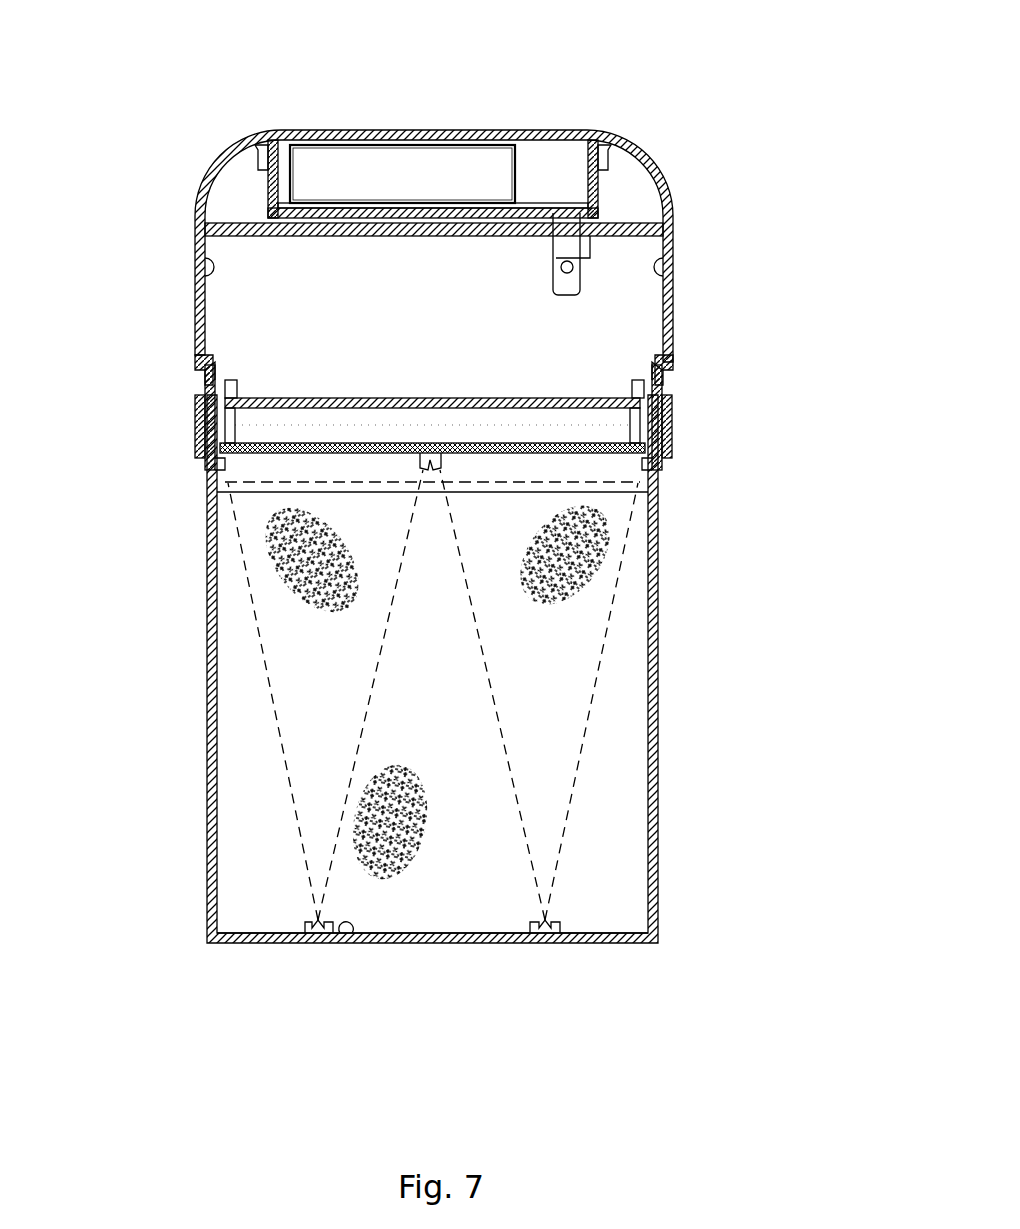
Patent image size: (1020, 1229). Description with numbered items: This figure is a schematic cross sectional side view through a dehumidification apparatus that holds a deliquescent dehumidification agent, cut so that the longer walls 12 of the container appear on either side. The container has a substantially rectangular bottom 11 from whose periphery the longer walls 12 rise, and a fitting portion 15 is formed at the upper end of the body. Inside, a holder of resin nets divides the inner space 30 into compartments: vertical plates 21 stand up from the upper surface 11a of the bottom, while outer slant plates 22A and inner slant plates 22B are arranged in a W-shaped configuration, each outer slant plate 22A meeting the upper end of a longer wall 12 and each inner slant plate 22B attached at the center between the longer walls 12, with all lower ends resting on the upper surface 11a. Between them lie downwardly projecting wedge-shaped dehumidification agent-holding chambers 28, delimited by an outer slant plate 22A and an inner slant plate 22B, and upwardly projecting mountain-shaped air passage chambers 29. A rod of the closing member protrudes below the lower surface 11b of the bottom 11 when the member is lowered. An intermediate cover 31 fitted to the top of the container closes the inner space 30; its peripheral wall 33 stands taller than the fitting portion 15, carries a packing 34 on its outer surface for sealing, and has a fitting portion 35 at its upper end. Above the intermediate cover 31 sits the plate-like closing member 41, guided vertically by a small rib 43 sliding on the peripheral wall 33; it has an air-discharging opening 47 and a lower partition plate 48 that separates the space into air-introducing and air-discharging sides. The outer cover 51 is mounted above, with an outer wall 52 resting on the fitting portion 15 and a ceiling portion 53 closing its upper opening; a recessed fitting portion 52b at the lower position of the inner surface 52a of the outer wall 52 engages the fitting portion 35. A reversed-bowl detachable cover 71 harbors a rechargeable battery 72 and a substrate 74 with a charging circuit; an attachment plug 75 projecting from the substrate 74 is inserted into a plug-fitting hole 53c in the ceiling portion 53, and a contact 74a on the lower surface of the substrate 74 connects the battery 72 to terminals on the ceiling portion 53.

The bottom 11 is at (255, 945).
The upper surface of the bottom 11a is at (348, 940).
The lower surface of the bottom 11b is at (500, 940).
The longer wall 12 is at (207, 786).
The fitting portion 15 is at (200, 430).
The vertical plate 21 is at (443, 703).
The outer slant plate 22A is at (268, 712).
The inner slant plate 22B is at (380, 628).
The dehumidification agent-holding chamber 28 is at (335, 735).
The air passage chamber 29 is at (282, 890).
The inner space 30 is at (476, 862).
The intermediate cover 31 is at (275, 455).
The peripheral wall 33 is at (200, 410).
The packing 34 is at (215, 455).
The fitting portion 35 is at (205, 372).
The closing member 41 is at (565, 400).
The small rib 43 is at (248, 385).
The air-discharging opening 47 is at (477, 404).
The lower partition plate 48 is at (345, 425).
The outer cover 51 is at (790, 278).
The outer wall 52 is at (195, 270).
The inner surface of the outer wall 52a is at (200, 254).
The recessed fitting portion 52b is at (200, 360).
The ceiling portion 53 is at (633, 222).
The plug-fitting hole 53c is at (592, 258).
The detachable cover 71 is at (312, 130).
The rechargeable battery 72 is at (400, 162).
The substrate 74 is at (525, 205).
The contact 74a is at (297, 236).
The attachment plug 75 is at (580, 282).